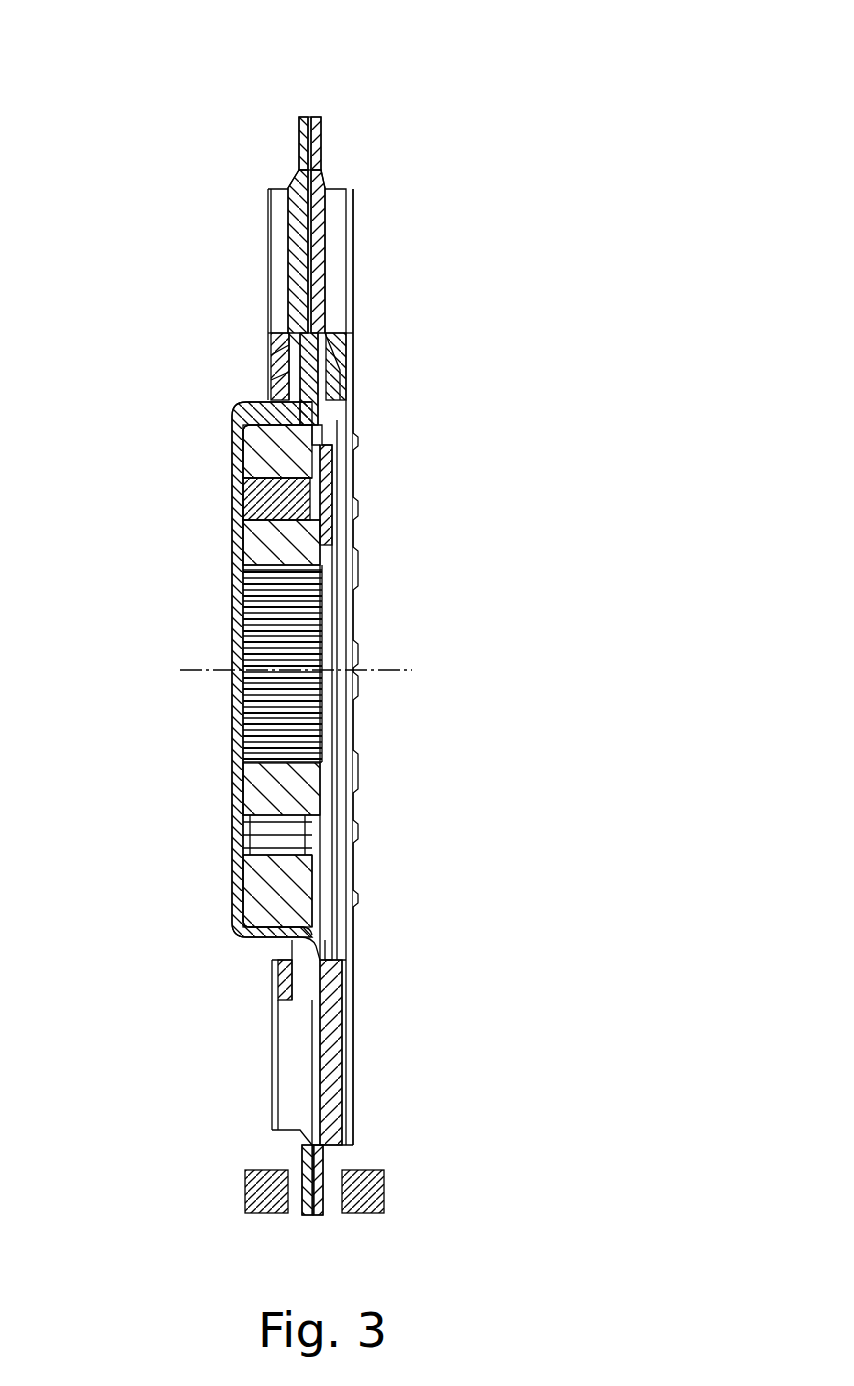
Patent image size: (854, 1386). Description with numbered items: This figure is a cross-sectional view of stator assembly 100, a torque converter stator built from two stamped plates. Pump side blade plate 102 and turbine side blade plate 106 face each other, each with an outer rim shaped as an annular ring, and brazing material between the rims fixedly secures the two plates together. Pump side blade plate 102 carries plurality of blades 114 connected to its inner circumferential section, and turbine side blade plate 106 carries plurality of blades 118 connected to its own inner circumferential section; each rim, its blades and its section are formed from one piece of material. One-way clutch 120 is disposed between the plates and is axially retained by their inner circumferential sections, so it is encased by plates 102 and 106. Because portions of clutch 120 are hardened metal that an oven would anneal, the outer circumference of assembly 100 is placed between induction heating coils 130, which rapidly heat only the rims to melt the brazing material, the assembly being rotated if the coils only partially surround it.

The stator assembly 100 is at (592, 103).
The pump side blade plate 102 is at (330, 148).
The turbine side blade plate 106 is at (292, 143).
The plurality of blades 114 is at (356, 280).
The plurality of blades 118 is at (265, 275).
The one-way clutch 120 is at (215, 452).
The induction heating coils 130 is at (362, 1212).